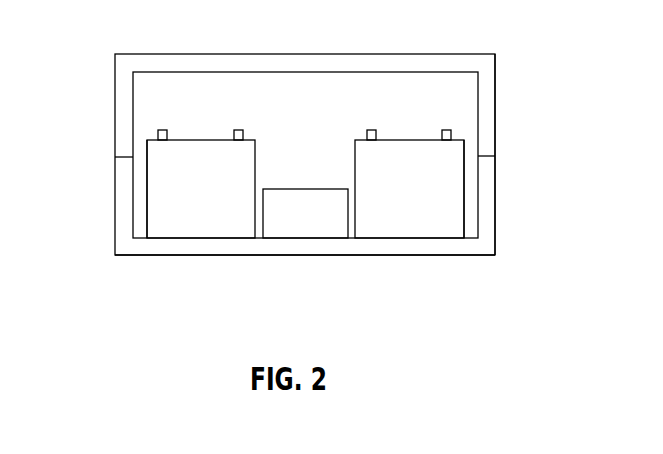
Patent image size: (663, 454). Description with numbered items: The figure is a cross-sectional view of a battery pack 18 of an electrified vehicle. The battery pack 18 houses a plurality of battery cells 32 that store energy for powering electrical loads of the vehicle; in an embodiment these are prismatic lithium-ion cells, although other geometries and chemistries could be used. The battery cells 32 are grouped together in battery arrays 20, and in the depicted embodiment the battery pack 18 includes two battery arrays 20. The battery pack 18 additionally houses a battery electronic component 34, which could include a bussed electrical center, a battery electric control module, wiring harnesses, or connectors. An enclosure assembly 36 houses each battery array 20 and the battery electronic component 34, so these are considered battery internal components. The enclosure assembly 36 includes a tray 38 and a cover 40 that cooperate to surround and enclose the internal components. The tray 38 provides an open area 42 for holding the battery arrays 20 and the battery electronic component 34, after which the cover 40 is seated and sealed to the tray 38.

The battery pack 18 is at (437, 27).
The battery array 20 is at (197, 125).
The battery cell 32 is at (146, 190).
The battery electronic component 34 is at (307, 220).
The enclosure assembly 36 is at (105, 75).
The tray 38 is at (202, 256).
The cover 40 is at (177, 65).
The open area 42 is at (320, 152).